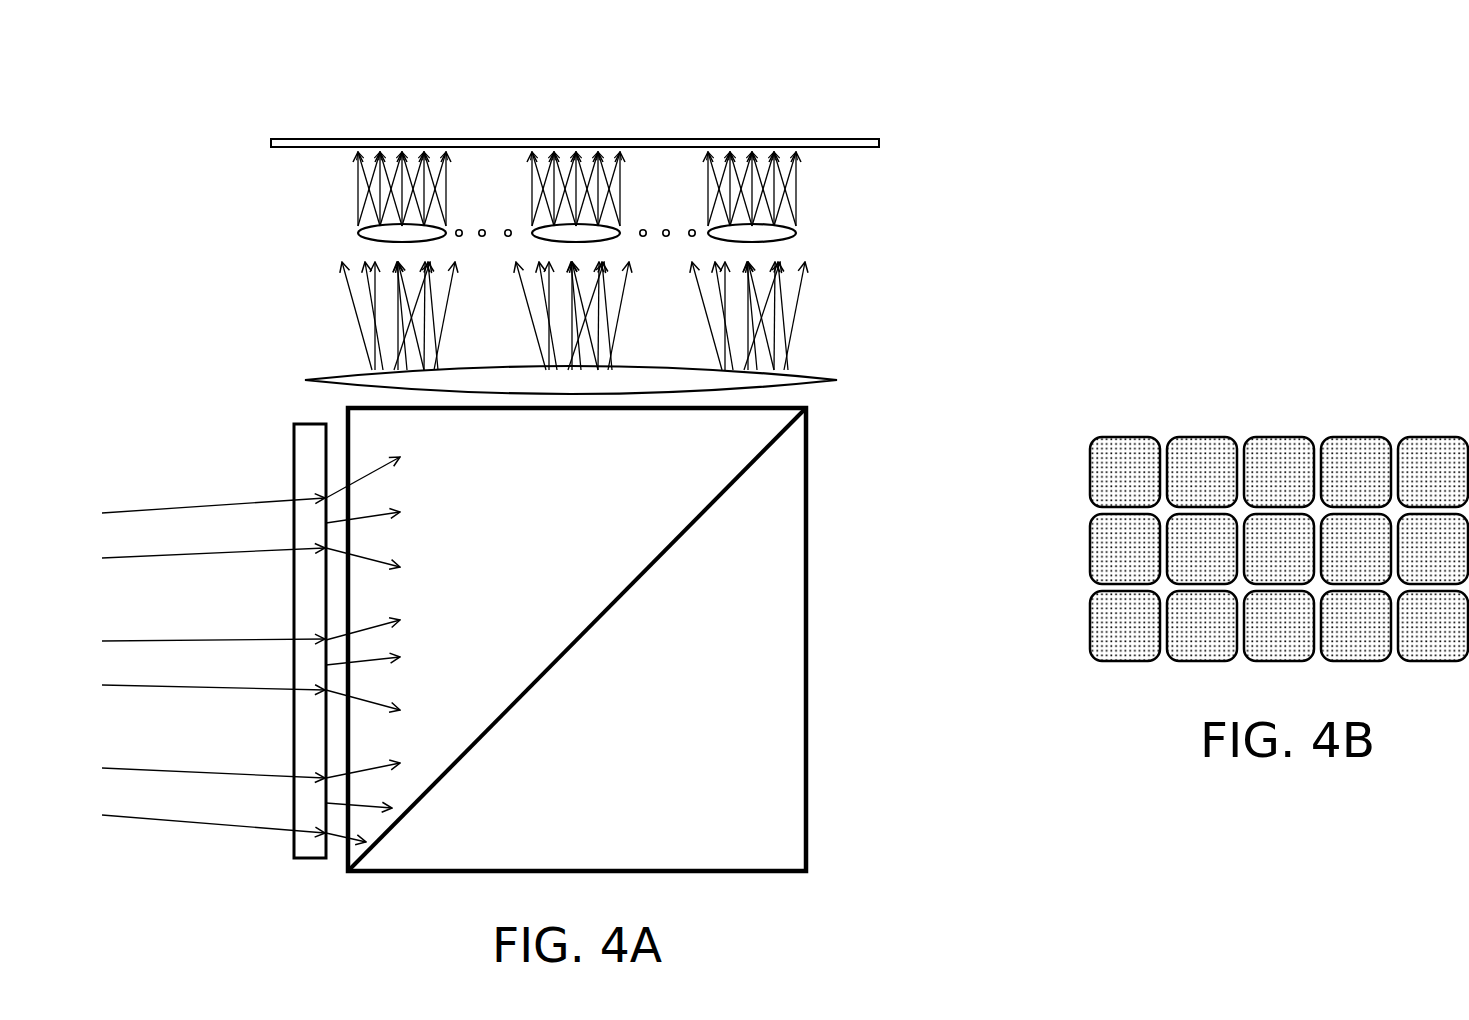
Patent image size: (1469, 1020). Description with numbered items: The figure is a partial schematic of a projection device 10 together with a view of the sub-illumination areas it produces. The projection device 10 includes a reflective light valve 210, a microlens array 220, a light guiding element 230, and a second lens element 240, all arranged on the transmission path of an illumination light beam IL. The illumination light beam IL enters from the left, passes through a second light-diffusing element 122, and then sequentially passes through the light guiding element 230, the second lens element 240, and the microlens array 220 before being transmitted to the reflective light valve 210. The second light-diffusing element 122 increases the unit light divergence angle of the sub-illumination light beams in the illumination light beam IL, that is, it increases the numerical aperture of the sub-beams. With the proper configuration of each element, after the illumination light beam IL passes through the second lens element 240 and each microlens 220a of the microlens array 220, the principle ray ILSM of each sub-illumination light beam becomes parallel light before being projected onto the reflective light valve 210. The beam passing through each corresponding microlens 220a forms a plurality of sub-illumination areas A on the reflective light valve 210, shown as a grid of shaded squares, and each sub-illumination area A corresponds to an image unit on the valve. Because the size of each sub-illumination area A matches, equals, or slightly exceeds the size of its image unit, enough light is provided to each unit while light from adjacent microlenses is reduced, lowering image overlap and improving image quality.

In FIG. 4A, the projection device 10 is at (868, 108).
In FIG. 4A, the reflective light valve 210 is at (880, 143).
In FIG. 4A, the microlens array 220 is at (649, 261).
In FIG. 4A, the microlens 220a is at (796, 236).
In FIG. 4A, the principle ray ILSM is at (358, 192).
In FIG. 4A, the second lens element 240 is at (837, 380).
In FIG. 4A, the light guiding element 230 is at (806, 640).
In FIG. 4A, the second light-diffusing element 122 is at (311, 858).
In FIG. 4A, the illumination light beam IL is at (200, 827).
In FIG. 4B, the sub-illumination area A is at (1366, 440).